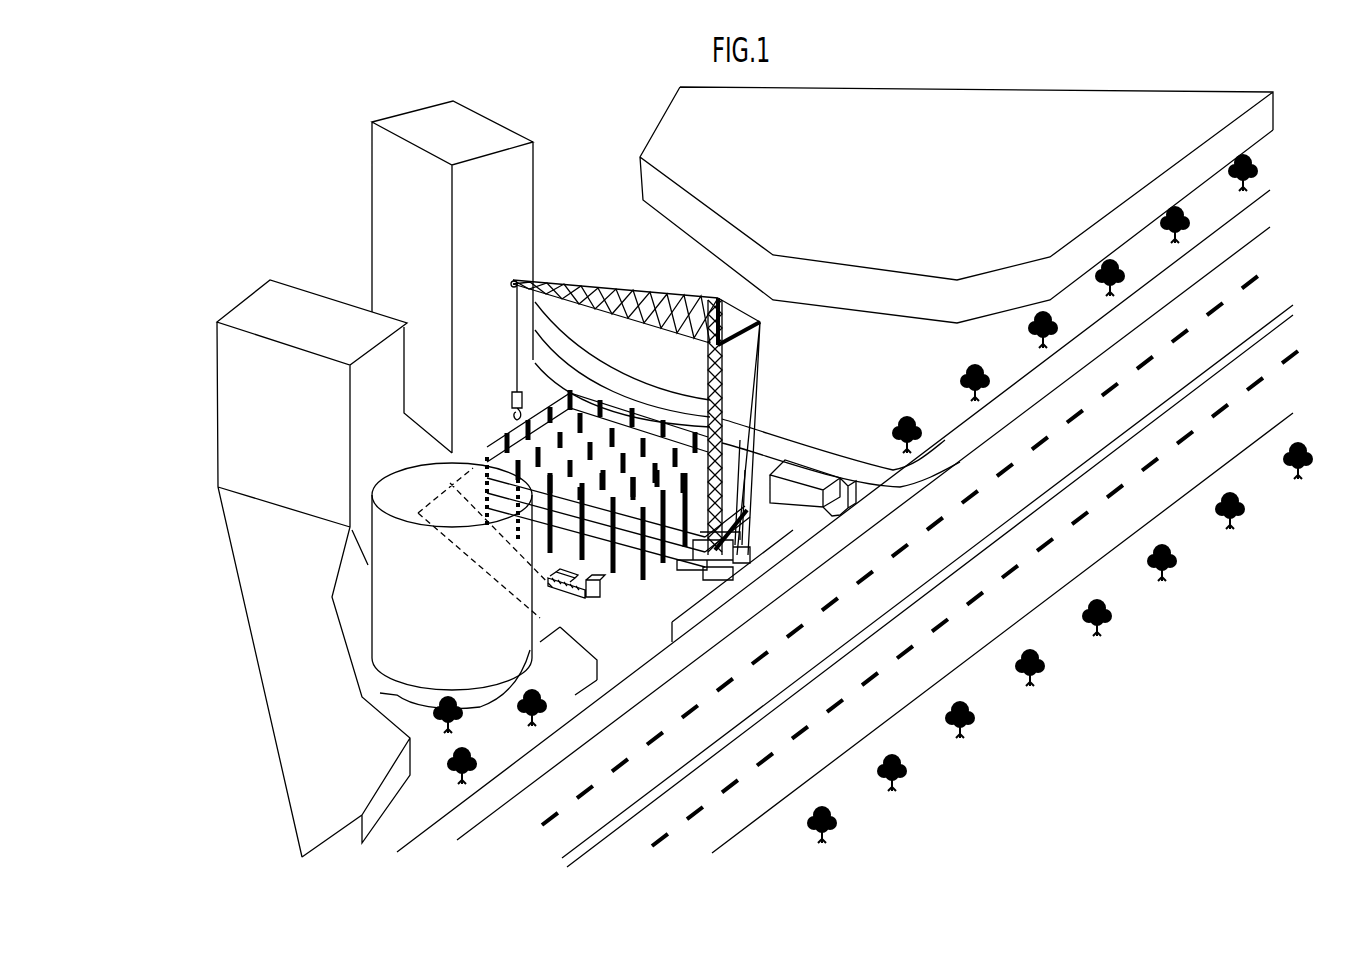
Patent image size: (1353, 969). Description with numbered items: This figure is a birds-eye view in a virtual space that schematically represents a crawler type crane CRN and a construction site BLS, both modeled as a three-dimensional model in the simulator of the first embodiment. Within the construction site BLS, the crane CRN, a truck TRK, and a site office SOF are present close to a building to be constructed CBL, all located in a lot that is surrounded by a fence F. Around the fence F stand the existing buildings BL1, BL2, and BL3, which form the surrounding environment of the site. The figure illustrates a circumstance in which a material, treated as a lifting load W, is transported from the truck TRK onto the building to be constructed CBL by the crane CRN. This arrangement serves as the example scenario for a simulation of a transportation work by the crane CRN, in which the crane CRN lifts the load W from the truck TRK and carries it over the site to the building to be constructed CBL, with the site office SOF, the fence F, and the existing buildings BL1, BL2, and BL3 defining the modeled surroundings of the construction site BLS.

The lifting load W is at (467, 417).
The existing building BL1 is at (450, 634).
The existing building BL2 is at (300, 437).
The existing building BL3 is at (427, 252).
The truck TRK is at (587, 607).
The crawler type crane CRN is at (765, 407).
The site office SOF is at (813, 503).
The fence F is at (787, 552).
The building to be constructed CBL is at (653, 535).
The construction site BLS is at (622, 637).